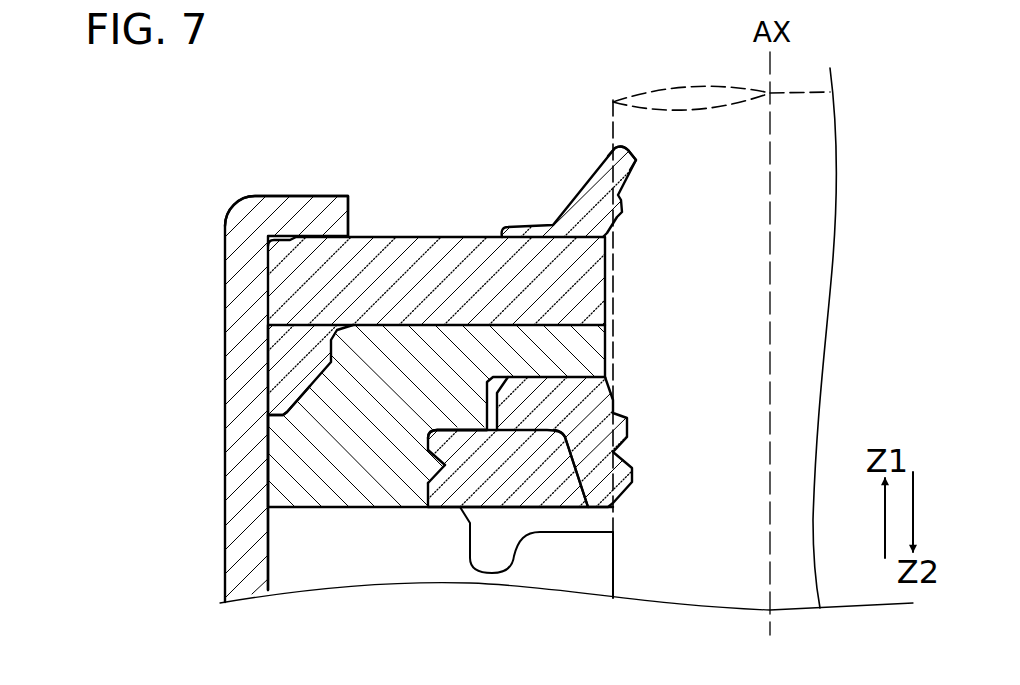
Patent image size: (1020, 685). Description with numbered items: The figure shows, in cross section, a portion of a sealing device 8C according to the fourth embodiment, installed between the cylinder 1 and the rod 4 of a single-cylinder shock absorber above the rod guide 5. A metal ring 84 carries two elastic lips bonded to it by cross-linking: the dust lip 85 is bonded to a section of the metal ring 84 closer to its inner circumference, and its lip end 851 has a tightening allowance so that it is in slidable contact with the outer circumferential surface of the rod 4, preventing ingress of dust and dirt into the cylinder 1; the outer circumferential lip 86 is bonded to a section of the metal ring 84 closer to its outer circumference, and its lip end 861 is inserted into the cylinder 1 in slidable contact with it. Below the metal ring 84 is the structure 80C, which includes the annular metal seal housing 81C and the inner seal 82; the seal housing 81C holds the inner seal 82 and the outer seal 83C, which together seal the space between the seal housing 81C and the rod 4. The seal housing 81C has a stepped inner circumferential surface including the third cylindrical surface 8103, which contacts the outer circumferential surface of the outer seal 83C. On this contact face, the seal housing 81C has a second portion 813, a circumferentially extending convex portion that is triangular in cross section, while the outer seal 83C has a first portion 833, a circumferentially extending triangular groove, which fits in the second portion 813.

The cylinder 1 is at (296, 192).
The rod 4 is at (606, 115).
The rod guide 5 is at (262, 569).
The sealing device 8C is at (70, 217).
The metal ring 84 is at (262, 290).
The dust lip 85 is at (500, 223).
The lip end 851 is at (614, 150).
The outer circumferential lip 86 is at (262, 349).
The lip end 861 is at (287, 403).
The structure 80C is at (150, 407).
The seal housing 81C is at (262, 415).
The inner seal 82 is at (492, 393).
The outer seal 83C is at (422, 442).
The second portion 813 is at (445, 463).
The first portion 833 is at (428, 478).
The third cylindrical surface 8103 is at (455, 446).